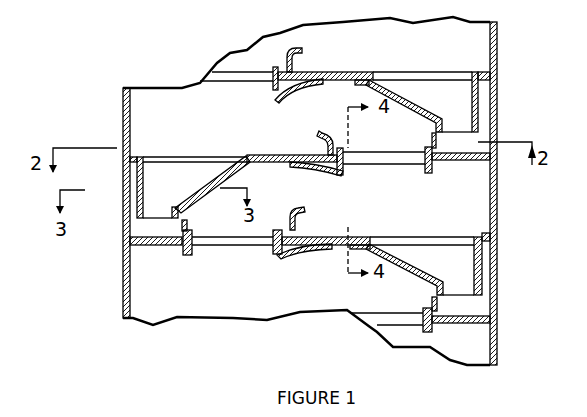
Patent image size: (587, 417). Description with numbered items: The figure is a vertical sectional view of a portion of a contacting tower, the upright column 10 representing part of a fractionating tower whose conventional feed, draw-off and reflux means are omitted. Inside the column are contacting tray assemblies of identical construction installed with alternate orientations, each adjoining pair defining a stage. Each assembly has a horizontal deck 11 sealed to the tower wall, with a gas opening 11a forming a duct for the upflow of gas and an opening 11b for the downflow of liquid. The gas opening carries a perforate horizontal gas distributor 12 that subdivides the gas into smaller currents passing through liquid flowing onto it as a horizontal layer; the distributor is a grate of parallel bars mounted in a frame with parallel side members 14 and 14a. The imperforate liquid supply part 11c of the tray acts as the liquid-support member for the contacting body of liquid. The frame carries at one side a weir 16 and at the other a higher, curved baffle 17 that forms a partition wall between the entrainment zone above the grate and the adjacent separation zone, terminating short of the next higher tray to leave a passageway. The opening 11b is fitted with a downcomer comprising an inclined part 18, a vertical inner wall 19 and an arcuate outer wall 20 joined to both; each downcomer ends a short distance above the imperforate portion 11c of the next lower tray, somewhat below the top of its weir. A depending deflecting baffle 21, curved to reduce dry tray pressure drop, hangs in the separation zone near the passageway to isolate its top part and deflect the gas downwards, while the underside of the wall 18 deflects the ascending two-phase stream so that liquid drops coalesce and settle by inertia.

The upright column 10 is at (497, 225).
The horizontal deck 11 is at (288, 157).
The gas opening 11a is at (360, 153).
The liquid opening 11b is at (205, 157).
The imperforate liquid supply part 11c is at (480, 158).
The perforate horizontal gas distributor 12 is at (378, 160).
The frame side member 14 is at (428, 167).
The frame side member 14a is at (343, 164).
The weir 16 is at (187, 223).
The baffle 17 is at (301, 214).
The inclined part 18 is at (208, 188).
The vertical inner wall 19 is at (172, 210).
The arcuate outer wall 20 is at (140, 188).
The depending deflecting baffle 21 is at (313, 168).